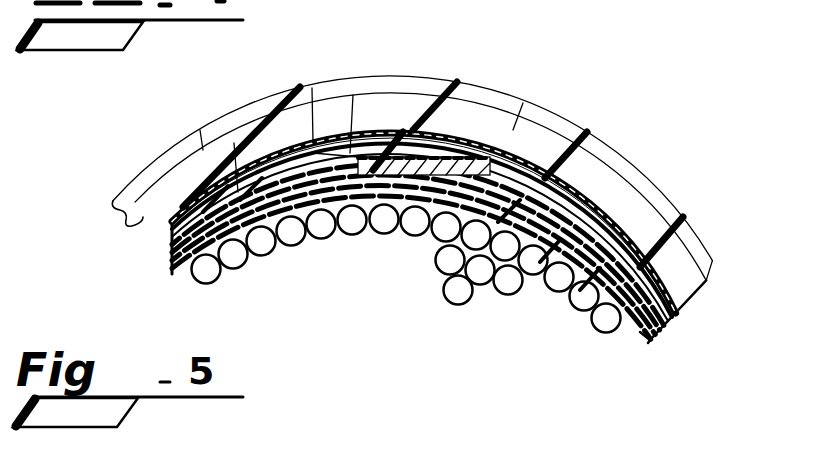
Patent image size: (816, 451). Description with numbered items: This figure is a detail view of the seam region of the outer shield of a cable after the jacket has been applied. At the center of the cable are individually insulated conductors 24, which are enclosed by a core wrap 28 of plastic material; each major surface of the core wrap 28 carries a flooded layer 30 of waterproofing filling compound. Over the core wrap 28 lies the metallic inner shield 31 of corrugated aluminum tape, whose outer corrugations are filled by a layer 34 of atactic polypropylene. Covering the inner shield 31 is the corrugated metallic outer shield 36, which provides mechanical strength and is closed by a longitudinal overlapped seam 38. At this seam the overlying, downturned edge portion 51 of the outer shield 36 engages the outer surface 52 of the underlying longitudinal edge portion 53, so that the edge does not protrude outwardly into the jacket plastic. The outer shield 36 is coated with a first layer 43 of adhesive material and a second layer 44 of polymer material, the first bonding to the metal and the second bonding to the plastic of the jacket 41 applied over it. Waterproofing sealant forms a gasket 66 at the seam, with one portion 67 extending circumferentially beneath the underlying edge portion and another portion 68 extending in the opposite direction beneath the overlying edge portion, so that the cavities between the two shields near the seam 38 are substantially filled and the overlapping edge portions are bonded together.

The individually insulated conductors 24 is at (458, 296).
The core wrap 28 is at (638, 330).
The layer of filling compound 30 is at (648, 215).
The inner shield 31 is at (592, 209).
The layer of atactic polypropylene material 34 is at (312, 90).
The outer shield 36 is at (290, 98).
The overlapped seam 38 is at (447, 137).
The jacket 41 is at (200, 148).
The first layer 43 is at (234, 145).
The second layer 44 is at (145, 181).
The downturned edge portion 51 is at (388, 150).
The outer surface 52 is at (520, 150).
The underlying longitudinal edge portion 53 is at (493, 150).
The gasket 66 is at (353, 96).
The portion of gasket 67 is at (590, 153).
The portion of gasket 68 is at (167, 217).